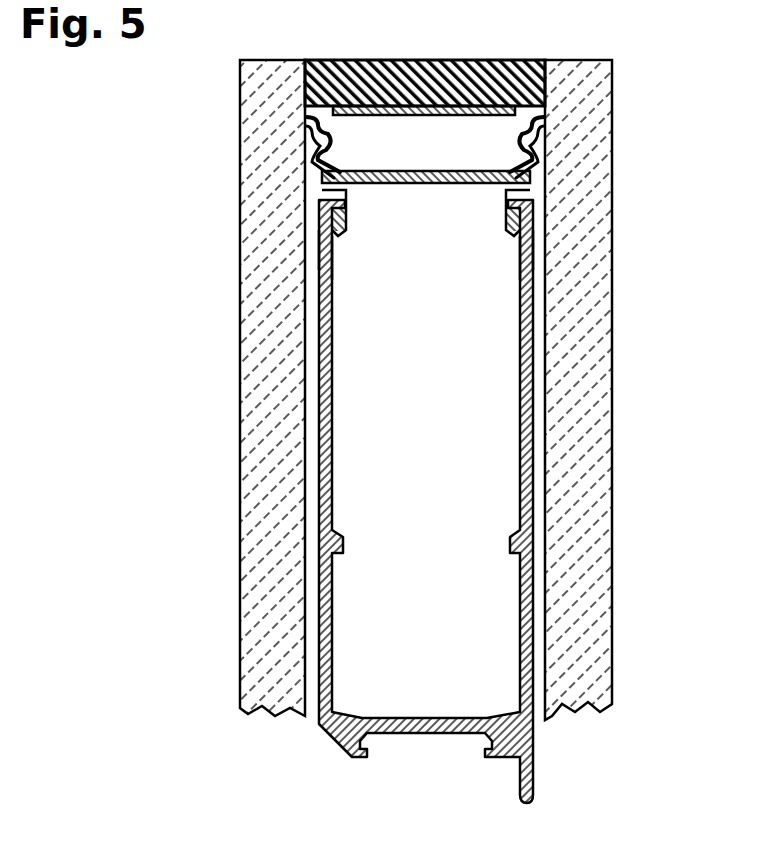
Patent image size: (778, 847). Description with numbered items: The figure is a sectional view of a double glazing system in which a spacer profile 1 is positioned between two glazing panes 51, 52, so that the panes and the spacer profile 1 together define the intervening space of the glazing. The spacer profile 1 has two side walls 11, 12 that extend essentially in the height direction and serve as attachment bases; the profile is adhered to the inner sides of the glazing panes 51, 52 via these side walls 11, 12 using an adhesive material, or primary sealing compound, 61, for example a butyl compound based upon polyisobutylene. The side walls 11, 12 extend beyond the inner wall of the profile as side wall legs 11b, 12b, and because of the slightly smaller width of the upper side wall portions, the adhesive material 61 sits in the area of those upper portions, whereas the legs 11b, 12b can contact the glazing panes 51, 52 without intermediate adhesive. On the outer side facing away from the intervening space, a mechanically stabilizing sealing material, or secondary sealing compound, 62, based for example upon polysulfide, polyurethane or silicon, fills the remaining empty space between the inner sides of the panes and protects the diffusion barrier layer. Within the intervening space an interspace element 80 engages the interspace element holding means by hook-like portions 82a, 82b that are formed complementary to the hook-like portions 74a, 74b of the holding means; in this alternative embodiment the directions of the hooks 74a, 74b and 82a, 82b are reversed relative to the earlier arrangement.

The spacer profile 1 is at (551, 161).
The side wall 11 is at (322, 200).
The side wall leg 11b is at (318, 235).
The side wall 12 is at (540, 203).
The side wall leg 12b is at (540, 235).
The glazing pane 51 is at (280, 458).
The glazing pane 52 is at (572, 420).
The adhesive material (primary sealing compound) 61 is at (306, 135).
The sealing material (secondary sealing compound) 62 is at (358, 92).
The hook-like portion 74a is at (330, 275).
The hook-like portion 74b is at (530, 275).
The interspace element 80 is at (534, 487).
The hook-like portion 82a is at (312, 142).
The hook-like portion 82b is at (507, 125).